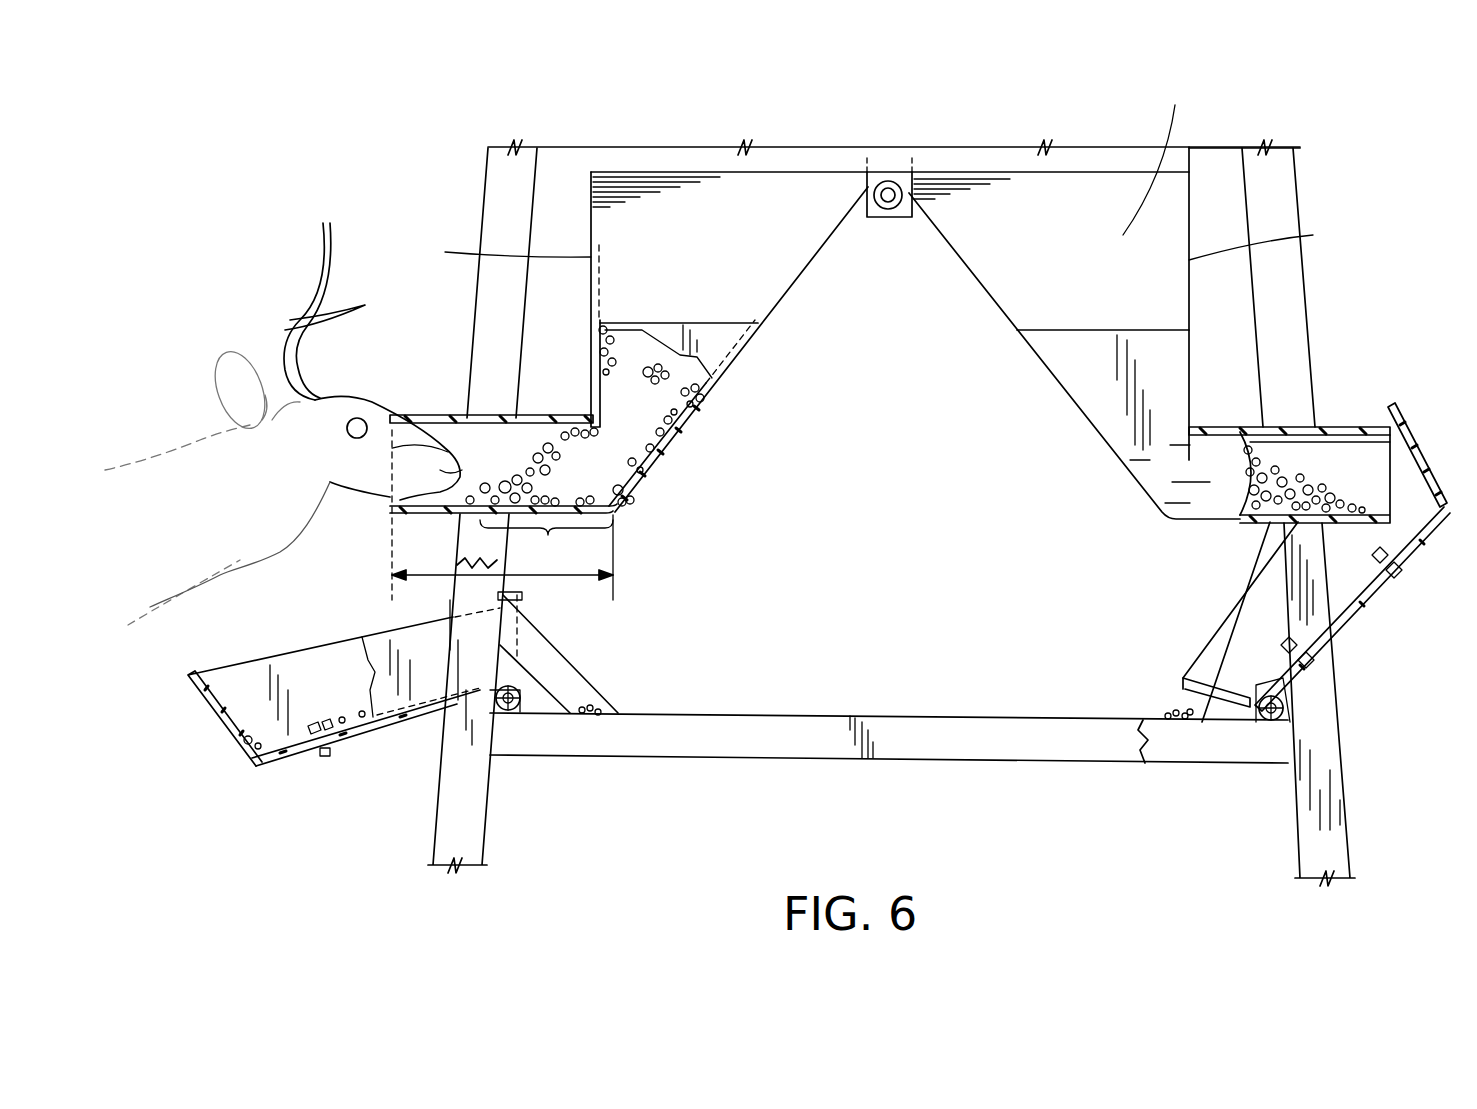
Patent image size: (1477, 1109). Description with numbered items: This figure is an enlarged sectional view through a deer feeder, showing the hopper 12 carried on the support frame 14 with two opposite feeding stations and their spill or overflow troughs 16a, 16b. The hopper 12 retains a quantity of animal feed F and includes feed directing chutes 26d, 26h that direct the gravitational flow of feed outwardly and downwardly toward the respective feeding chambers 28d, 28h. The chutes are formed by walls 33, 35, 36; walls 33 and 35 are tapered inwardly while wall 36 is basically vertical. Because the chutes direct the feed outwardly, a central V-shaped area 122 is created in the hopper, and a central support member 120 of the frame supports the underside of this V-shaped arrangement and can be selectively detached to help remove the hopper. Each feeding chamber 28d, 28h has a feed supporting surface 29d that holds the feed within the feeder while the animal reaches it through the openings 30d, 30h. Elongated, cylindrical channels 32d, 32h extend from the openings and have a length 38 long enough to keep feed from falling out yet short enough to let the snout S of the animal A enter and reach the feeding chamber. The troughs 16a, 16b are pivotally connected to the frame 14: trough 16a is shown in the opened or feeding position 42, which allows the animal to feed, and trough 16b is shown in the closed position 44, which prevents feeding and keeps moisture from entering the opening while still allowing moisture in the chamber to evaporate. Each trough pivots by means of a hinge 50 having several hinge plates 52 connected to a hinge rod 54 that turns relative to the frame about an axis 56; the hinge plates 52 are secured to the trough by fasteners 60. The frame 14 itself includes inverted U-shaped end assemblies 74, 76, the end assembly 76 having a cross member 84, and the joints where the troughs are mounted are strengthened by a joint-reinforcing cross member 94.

The hopper 12 is at (668, 148).
The support frame 14 is at (1302, 184).
The spill or overflow trough 16a is at (214, 728).
The spill or overflow trough 16b is at (1334, 592).
The feed directing chute 26d is at (748, 276).
The feed directing chute 26h is at (1080, 298).
The feeding chamber 28d is at (538, 415).
The feeding chamber 28h is at (1212, 425).
The feed supporting surface 29d is at (546, 543).
The opening 30d is at (390, 495).
The opening 30h is at (1385, 462).
The elongated channel 32d is at (452, 415).
The elongated channel 32h is at (1347, 427).
The wall 33 is at (1156, 159).
The wall 35 is at (818, 258).
The wall 36 is at (881, 243).
The length 38 is at (410, 580).
The opened or feeding position 42 is at (238, 650).
The closed position 44 is at (1410, 388).
The hinge 50 is at (530, 694).
The hinge plate 52 is at (1325, 632).
The hinge rod 54 is at (495, 690).
The axis 56 is at (518, 708).
The fastener 60 is at (1385, 548).
The inverted U-shaped end assembly 74 is at (500, 205).
The inverted U-shaped end assembly 76 is at (470, 848).
The cross member 84 is at (786, 752).
The joint-reinforcing cross member 94 is at (585, 702).
The central support member 120 is at (889, 218).
The central V-shaped area 122 is at (930, 250).
The animal A is at (195, 472).
The snout S is at (430, 465).
The animal feed F is at (248, 747).